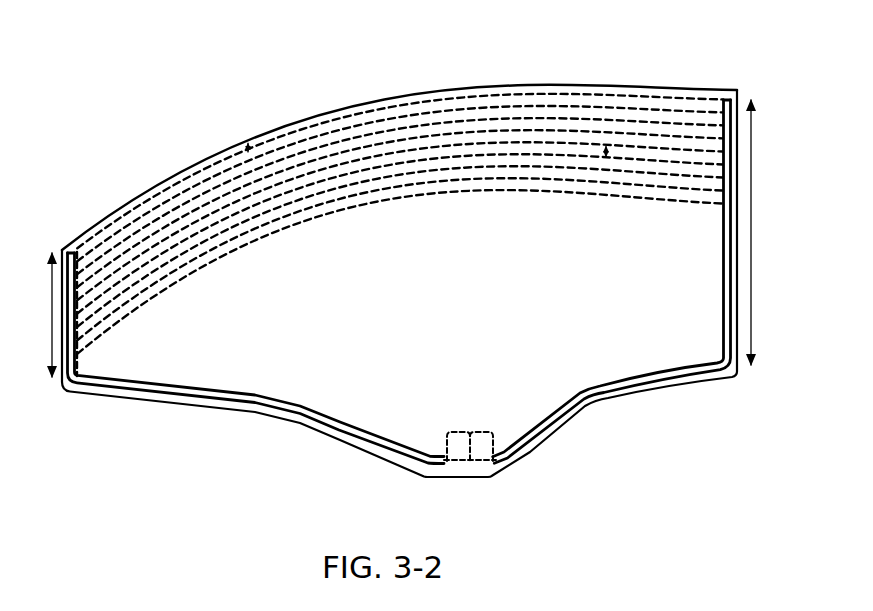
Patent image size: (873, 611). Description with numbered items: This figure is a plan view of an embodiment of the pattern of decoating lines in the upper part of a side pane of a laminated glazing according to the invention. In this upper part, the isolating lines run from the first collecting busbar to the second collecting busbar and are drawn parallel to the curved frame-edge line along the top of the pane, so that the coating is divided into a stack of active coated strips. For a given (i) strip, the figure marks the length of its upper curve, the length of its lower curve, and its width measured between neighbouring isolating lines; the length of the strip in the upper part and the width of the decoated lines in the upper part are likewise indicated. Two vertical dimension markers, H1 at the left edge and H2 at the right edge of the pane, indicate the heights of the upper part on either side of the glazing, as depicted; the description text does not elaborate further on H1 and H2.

The height of left side H1 is at (50, 312).
The height of right side H2 is at (755, 155).